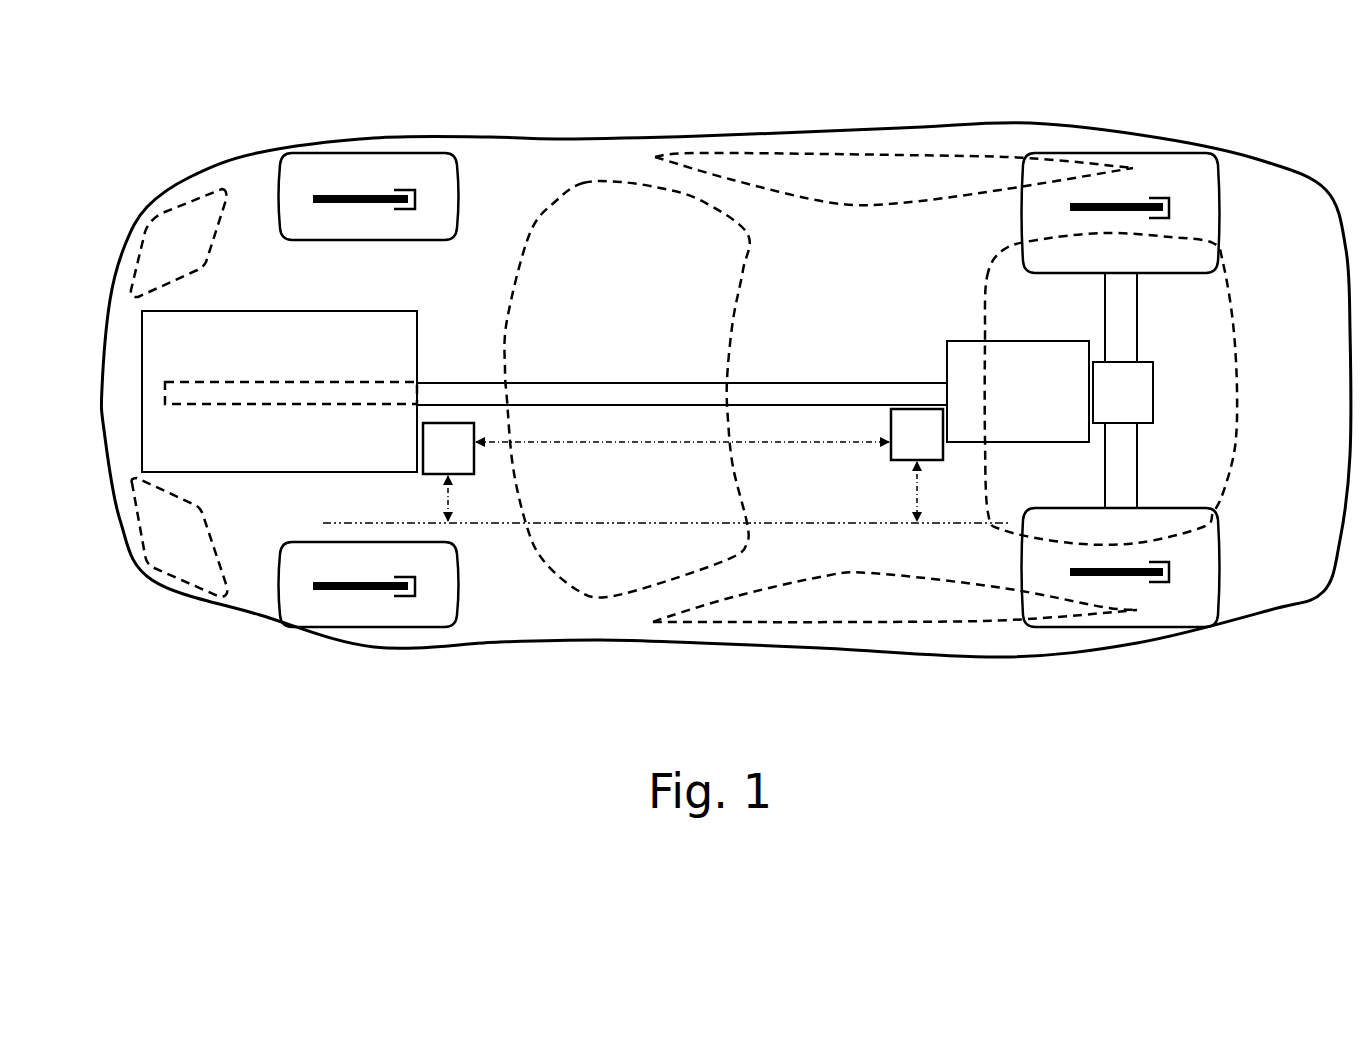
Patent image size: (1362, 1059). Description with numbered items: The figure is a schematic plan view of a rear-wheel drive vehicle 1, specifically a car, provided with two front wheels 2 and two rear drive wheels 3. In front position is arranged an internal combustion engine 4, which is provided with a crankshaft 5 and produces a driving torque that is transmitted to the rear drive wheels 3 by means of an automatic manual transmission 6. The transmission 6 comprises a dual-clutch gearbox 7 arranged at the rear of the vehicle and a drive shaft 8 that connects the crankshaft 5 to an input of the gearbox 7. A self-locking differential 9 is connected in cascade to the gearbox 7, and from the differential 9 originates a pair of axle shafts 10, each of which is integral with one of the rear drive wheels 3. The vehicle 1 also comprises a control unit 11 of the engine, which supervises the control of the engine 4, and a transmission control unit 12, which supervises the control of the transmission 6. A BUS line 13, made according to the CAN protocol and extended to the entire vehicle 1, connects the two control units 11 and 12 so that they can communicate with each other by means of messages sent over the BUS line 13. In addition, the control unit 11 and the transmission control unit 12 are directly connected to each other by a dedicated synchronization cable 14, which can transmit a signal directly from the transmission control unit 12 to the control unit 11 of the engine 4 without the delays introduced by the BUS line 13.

The vehicle 1 is at (1225, 728).
The front wheels 2 is at (304, 172).
The rear drive wheels 3 is at (1200, 168).
The internal combustion engine 4 is at (152, 336).
The crankshaft 5 is at (267, 388).
The automatic manual transmission 6 is at (880, 315).
The dual-clutch gearbox 7 is at (978, 370).
The drive shaft 8 is at (787, 398).
The self-locking differential 9 is at (1125, 392).
The axle shafts 10 is at (1120, 330).
The control unit of the engine 11 is at (448, 472).
The transmission control unit 12 is at (917, 465).
The BUS line 13 is at (503, 545).
The synchronization cable 14 is at (605, 442).